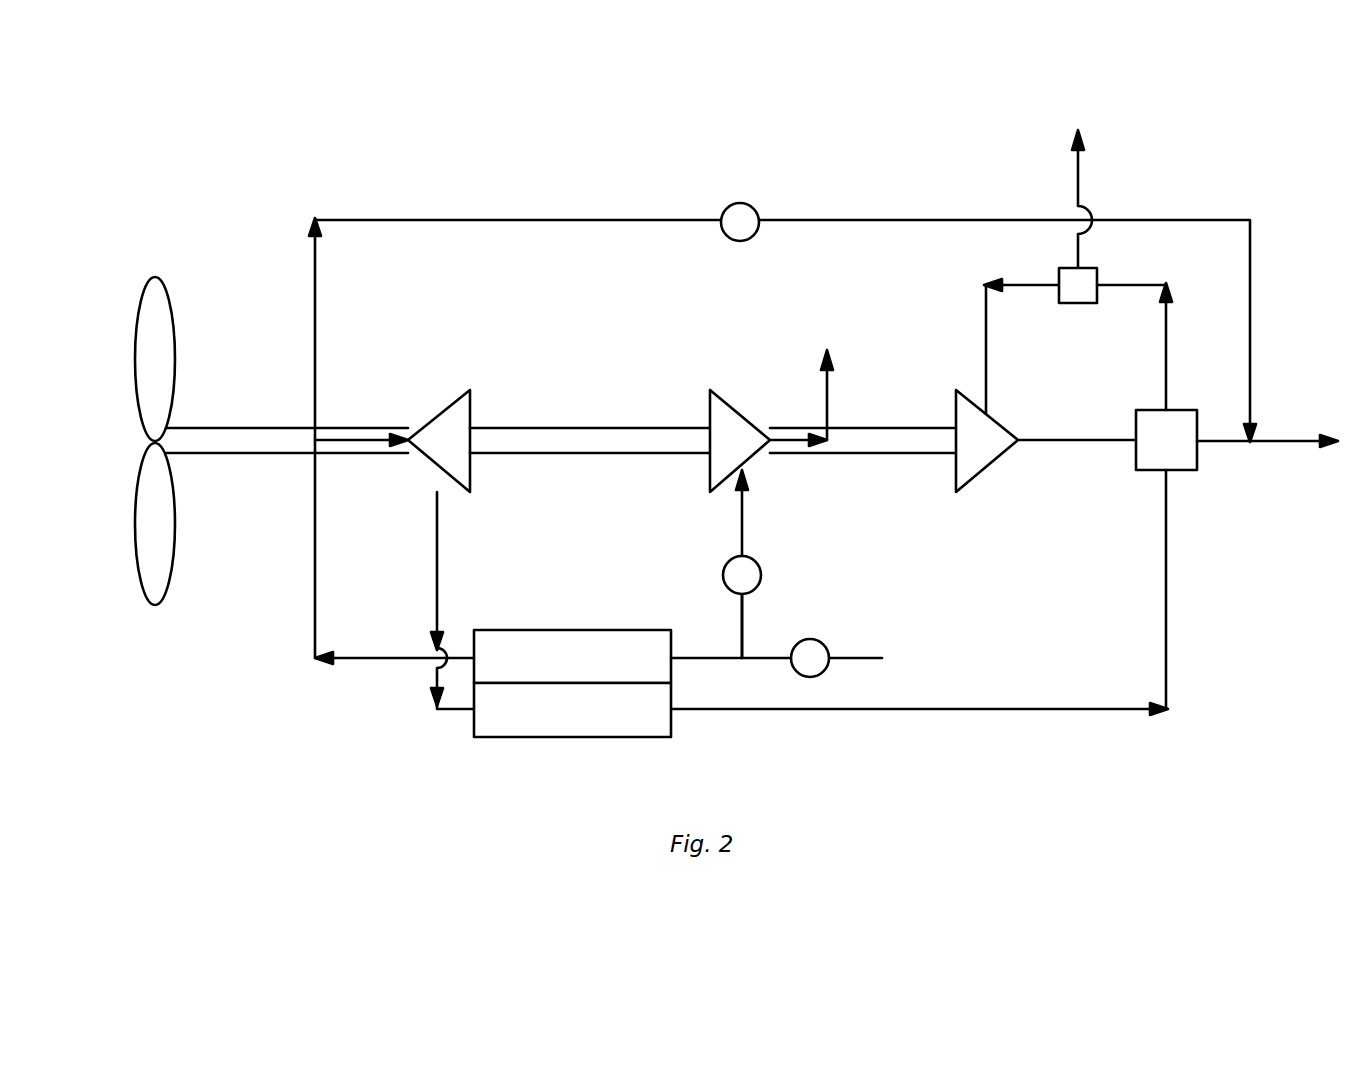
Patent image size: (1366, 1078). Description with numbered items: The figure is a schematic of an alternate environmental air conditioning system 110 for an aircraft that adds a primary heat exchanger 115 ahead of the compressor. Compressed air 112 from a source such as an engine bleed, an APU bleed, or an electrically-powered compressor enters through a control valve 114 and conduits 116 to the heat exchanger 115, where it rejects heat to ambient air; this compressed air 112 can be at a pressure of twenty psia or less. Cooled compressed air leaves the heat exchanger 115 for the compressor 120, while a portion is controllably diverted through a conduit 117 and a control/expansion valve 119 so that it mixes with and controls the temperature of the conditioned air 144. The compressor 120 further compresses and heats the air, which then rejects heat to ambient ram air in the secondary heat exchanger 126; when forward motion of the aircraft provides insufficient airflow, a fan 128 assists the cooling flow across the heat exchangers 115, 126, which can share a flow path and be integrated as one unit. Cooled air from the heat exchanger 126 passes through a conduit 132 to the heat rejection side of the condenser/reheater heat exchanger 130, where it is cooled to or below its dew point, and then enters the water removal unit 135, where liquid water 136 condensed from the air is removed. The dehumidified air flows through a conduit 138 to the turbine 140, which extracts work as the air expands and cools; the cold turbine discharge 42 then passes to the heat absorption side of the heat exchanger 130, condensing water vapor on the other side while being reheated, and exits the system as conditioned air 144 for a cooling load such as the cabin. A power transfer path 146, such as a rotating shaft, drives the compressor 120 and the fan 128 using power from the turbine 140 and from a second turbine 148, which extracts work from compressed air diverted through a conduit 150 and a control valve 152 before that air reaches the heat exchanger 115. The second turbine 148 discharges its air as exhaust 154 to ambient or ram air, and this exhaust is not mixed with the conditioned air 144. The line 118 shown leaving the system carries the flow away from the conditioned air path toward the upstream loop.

The environmental air conditioning system 110 is at (1262, 158).
The compressed air 112 is at (862, 660).
The control valve 114 is at (816, 640).
The heat exchanger 115 is at (530, 630).
The conduits 116 is at (704, 660).
The conduit 117 is at (470, 220).
The ram air line 118 is at (315, 582).
The control/expansion valve 119 is at (755, 206).
The compressor 120 is at (434, 412).
The heat exchanger 126 is at (560, 737).
The fan 128 is at (136, 348).
The heat exchanger 130 is at (1136, 458).
The conduit 132 is at (1010, 712).
The water removal unit 135 is at (1078, 304).
The liquid water 136 is at (1078, 166).
The conduit 138 is at (986, 352).
The turbine 140 is at (952, 462).
The conditioned air 144 is at (1278, 442).
The power transfer path 146 is at (545, 428).
The turbine 148 is at (740, 412).
The conduit 150 is at (742, 616).
The control valve 152 is at (754, 564).
The exhaust 154 is at (827, 405).
The turbine output line 42 is at (1066, 440).